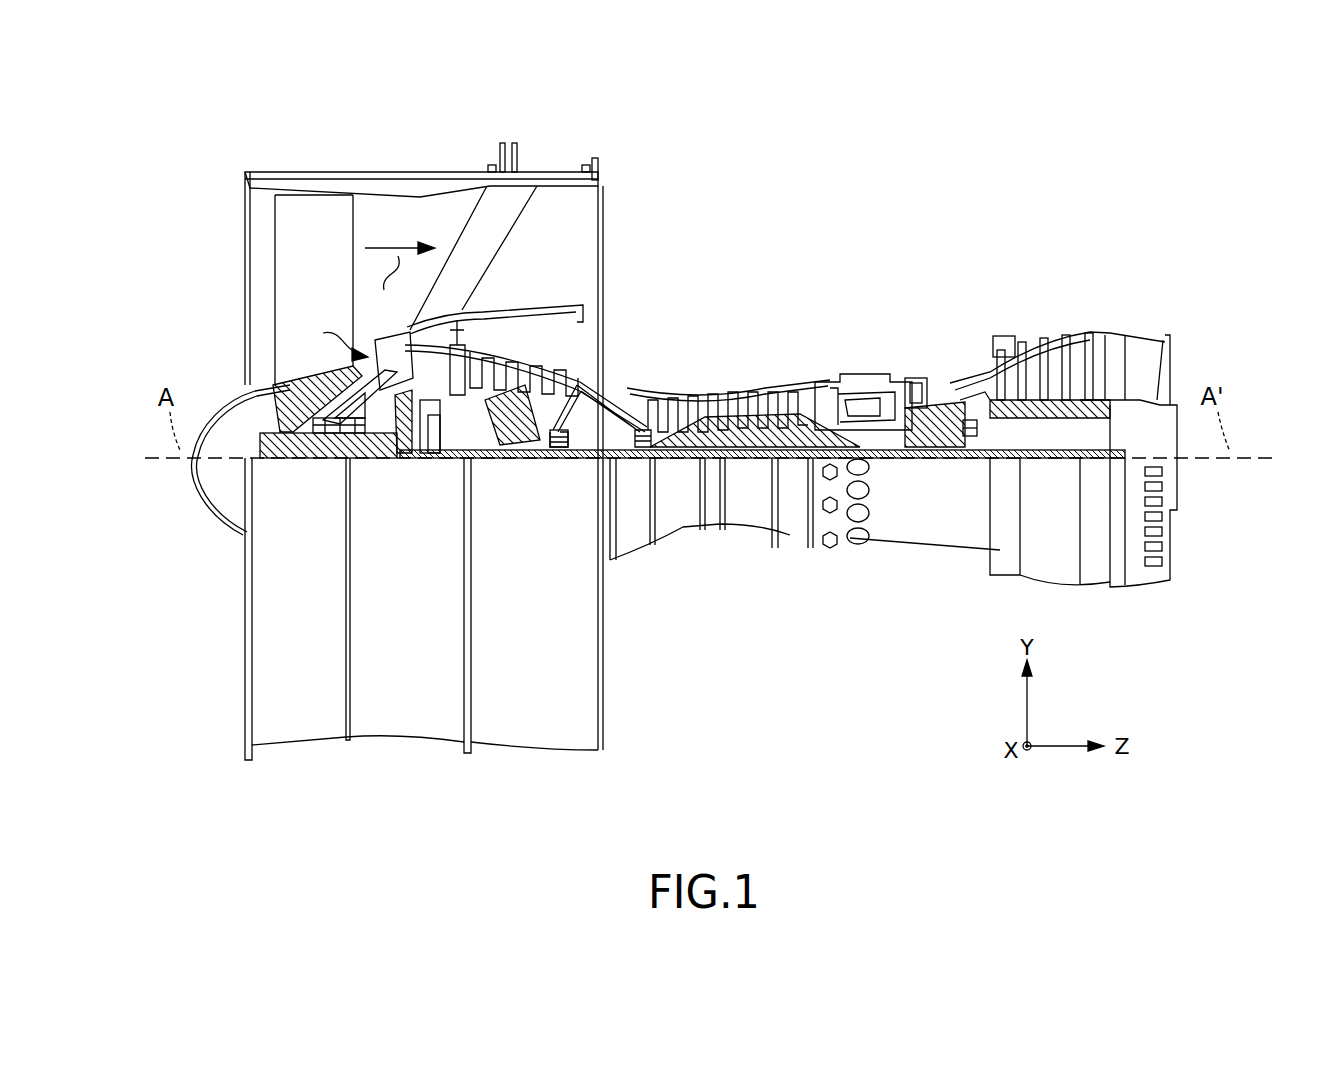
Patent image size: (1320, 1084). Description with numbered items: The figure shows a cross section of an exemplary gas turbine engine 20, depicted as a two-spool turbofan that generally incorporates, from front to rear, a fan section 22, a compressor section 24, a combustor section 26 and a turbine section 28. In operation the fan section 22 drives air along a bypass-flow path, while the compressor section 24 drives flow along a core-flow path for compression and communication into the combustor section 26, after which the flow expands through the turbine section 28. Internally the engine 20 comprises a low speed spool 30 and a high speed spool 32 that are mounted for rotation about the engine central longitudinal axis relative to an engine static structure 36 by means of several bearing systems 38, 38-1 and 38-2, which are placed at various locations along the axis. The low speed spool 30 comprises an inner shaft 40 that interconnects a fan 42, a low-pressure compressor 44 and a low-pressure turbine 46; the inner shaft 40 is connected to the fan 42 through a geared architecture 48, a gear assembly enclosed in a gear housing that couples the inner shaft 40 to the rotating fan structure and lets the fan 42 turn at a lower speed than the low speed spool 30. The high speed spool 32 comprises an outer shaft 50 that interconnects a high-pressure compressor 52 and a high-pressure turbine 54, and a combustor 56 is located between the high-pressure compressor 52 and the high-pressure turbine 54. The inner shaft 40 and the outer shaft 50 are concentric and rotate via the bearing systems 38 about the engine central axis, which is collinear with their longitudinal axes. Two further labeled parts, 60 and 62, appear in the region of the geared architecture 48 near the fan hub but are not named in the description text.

The gas turbine engine 20 is at (913, 165).
The fan section 22 is at (445, 156).
The compressor section 24 is at (470, 276).
The combustor section 26 is at (915, 274).
The turbine section 28 is at (1115, 276).
The low speed spool 30 is at (758, 480).
The high speed spool 32 is at (802, 415).
The engine static structure 36 is at (213, 770).
The bearing system 38 is at (972, 425).
The bearing system 38-1 is at (323, 438).
The bearing system 38-2 is at (560, 448).
The inner shaft 40 is at (618, 462).
The fan 42 is at (290, 302).
The low-pressure compressor 44 is at (540, 365).
The low-pressure turbine 46 is at (1058, 335).
The geared architecture 48 is at (423, 498).
The outer shaft 50 is at (872, 446).
The high-pressure compressor 52 is at (755, 415).
The high-pressure turbine 54 is at (928, 380).
The combustor 56 is at (868, 398).
The fan shaft 60 is at (445, 430).
The fan hub 62 is at (445, 408).